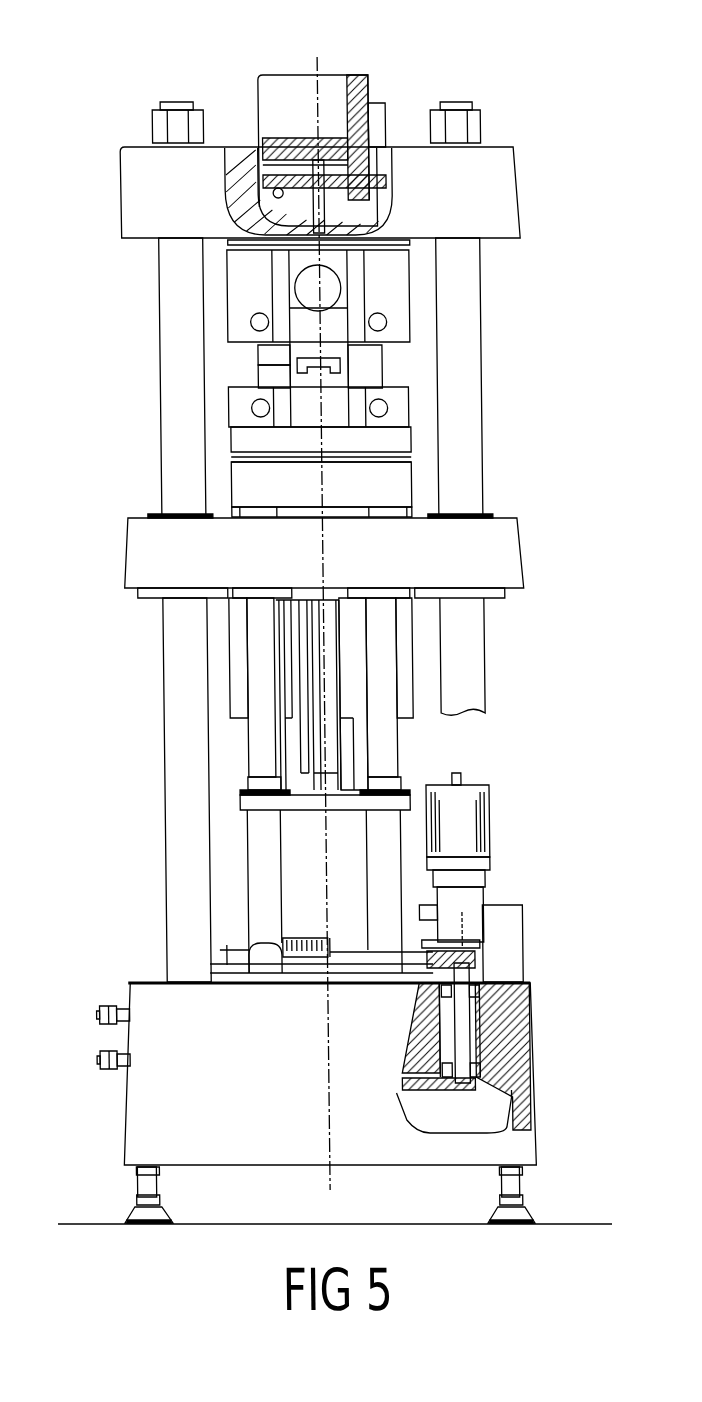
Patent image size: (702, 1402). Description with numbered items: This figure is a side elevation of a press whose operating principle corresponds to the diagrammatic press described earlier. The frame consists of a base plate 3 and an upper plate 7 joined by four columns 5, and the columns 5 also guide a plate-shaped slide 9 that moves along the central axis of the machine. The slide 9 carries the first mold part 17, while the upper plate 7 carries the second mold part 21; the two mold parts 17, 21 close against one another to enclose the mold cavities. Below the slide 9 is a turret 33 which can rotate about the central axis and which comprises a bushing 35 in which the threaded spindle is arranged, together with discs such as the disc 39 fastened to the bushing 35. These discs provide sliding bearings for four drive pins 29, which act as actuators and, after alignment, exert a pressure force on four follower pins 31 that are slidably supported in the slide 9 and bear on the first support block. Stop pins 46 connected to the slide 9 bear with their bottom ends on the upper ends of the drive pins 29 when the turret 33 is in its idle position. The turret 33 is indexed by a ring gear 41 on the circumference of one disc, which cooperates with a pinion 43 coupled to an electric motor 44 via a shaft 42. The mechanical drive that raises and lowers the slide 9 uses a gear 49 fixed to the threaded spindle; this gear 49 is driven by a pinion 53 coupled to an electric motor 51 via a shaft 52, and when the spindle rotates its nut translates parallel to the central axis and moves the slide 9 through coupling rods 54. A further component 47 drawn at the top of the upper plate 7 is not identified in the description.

The base plate 3 is at (110, 1112).
The columns 5 is at (470, 298).
The upper plate 7 is at (511, 200).
The slide 9 is at (507, 548).
The first mold part 17 is at (271, 382).
The second mold part 21 is at (271, 355).
The drive pins 29 is at (263, 920).
The follower pins 31 is at (264, 682).
The turret 33 is at (232, 882).
The bushing 35 is at (303, 843).
The disc 39 is at (246, 803).
The ring gear 41 is at (414, 962).
The shaft 42 is at (459, 925).
The pinion 43 is at (470, 957).
The electric motor 44 is at (465, 900).
The stop pins 46 is at (244, 635).
The ejector unit 47 is at (396, 76).
The gear 49 is at (405, 1097).
The electric motor 51 is at (475, 798).
The shaft 52 is at (459, 1035).
The pinion 53 is at (473, 1082).
The coupling rods 54 is at (293, 750).